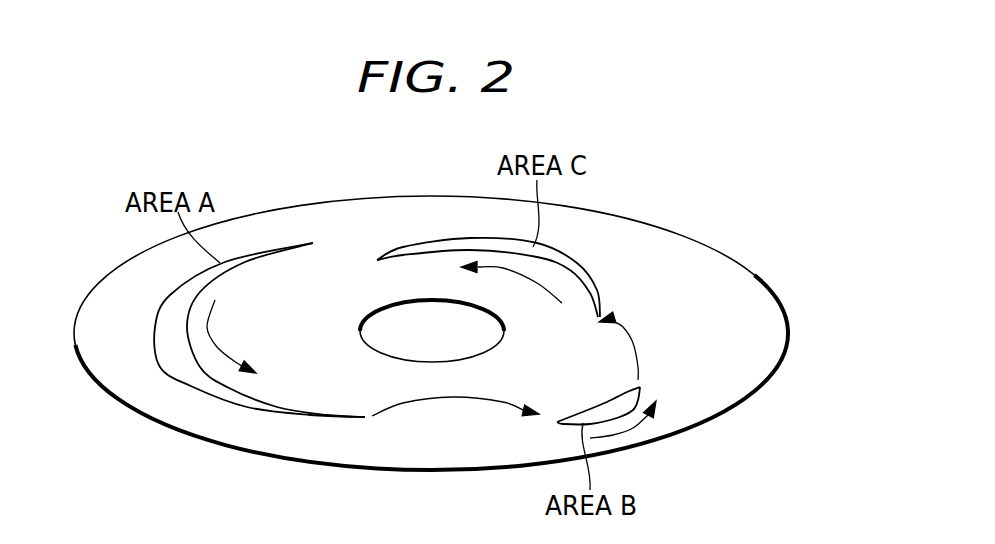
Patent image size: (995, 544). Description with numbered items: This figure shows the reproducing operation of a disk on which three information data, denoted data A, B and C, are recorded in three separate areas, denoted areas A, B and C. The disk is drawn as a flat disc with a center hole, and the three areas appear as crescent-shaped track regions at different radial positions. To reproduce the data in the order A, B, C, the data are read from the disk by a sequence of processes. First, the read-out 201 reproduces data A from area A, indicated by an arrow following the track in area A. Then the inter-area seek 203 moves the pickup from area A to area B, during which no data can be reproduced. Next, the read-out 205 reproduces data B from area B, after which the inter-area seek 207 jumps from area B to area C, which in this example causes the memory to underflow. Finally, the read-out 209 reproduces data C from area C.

The read-out of area A 201 is at (209, 344).
The inter-area seek from area A to area B 203 is at (472, 397).
The read-out of area B 205 is at (637, 430).
The inter-area seek from area B to area C 207 is at (637, 343).
The read-out of area C 209 is at (531, 279).